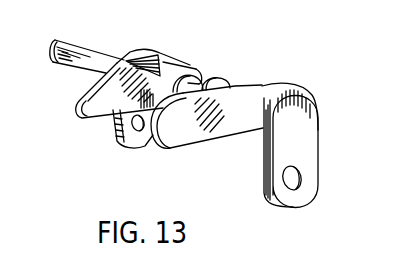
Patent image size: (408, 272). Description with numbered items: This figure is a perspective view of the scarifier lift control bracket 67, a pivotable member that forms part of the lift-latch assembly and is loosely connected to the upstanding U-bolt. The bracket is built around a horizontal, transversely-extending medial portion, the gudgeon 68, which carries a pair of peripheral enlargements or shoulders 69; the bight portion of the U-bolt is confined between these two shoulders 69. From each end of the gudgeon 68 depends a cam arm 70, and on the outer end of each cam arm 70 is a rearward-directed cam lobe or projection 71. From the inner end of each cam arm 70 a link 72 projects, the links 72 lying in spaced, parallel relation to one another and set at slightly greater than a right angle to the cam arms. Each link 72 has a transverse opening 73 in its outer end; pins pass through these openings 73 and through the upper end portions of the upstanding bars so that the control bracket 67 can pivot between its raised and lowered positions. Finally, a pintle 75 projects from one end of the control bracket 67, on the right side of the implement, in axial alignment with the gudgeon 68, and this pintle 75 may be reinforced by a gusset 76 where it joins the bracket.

The lift control bracket 67 is at (318, 113).
The gudgeon 68 is at (220, 80).
The shoulders 69 is at (203, 80).
The cam arm 70 is at (187, 136).
The cam lobe 71 is at (93, 120).
The link 72 is at (318, 167).
The transverse opening 73 is at (122, 147).
The pintle 75 is at (93, 47).
The gusset 76 is at (88, 73).